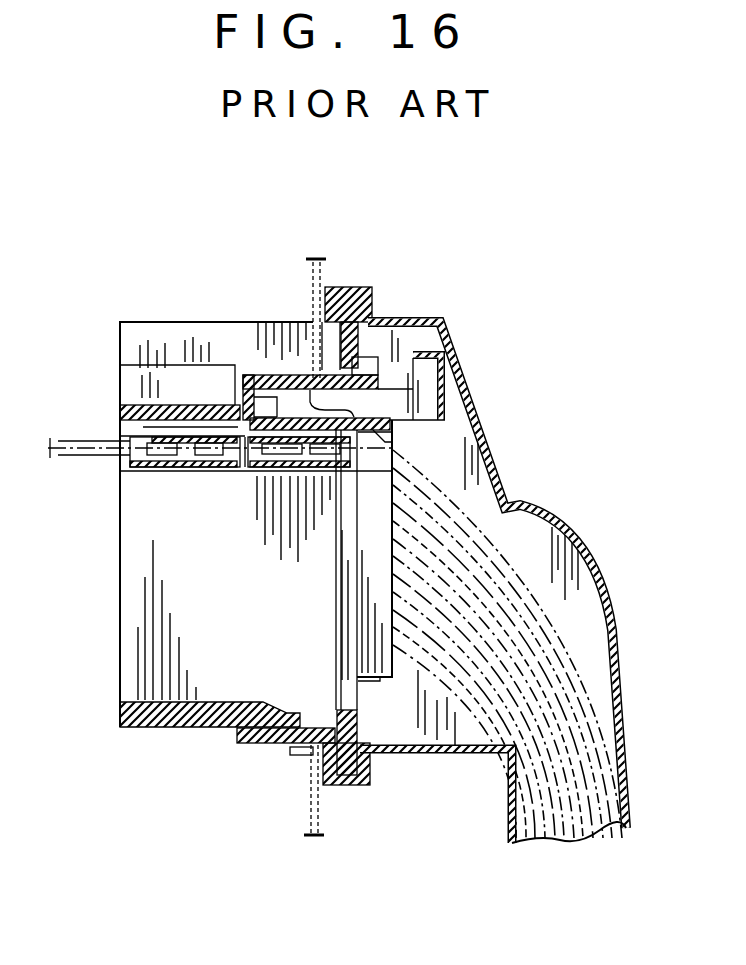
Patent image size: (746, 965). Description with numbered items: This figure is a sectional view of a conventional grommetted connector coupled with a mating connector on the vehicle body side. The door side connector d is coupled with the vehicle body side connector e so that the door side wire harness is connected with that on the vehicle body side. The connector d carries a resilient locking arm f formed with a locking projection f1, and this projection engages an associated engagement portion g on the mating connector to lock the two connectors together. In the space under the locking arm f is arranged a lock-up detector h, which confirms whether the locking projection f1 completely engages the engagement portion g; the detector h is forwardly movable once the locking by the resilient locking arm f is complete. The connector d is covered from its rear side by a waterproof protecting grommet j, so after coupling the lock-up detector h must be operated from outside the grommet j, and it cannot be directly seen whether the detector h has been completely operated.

The connector d is at (378, 680).
The vehicle body side connector e is at (133, 727).
The resilient locking arm f is at (277, 376).
The locking projection f1 is at (313, 374).
The engagement portion g is at (334, 288).
The lock-up detector h is at (444, 376).
The waterproof protecting grommet j is at (486, 440).